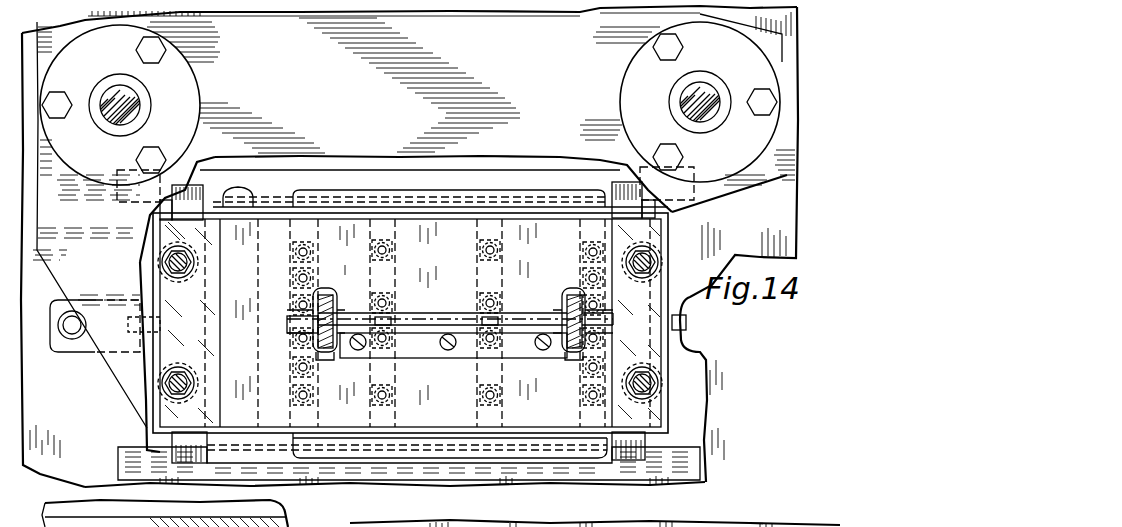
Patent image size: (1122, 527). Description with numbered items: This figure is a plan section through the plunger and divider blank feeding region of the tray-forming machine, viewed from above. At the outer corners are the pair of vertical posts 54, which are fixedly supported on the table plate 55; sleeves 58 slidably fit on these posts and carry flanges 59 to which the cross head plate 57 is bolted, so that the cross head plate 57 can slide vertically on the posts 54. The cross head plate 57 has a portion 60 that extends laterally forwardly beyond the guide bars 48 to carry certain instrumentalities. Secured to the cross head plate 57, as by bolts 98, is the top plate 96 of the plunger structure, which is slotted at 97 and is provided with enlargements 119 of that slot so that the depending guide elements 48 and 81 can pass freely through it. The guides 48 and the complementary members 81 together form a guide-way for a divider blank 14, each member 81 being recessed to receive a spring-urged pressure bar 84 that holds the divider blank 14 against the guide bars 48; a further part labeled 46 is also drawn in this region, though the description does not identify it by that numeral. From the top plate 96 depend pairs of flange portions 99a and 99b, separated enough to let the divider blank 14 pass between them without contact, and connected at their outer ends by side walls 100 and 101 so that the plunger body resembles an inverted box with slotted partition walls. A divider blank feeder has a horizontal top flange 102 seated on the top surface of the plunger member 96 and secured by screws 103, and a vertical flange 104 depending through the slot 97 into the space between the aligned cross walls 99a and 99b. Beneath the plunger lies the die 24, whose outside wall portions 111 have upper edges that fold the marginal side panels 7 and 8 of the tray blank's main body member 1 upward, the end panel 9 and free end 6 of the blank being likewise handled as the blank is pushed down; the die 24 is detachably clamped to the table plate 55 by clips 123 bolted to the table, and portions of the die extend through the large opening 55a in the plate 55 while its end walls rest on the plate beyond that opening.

The main body member 1 is at (412, 322).
The free end 6 is at (663, 409).
The marginal side panel 7 is at (440, 203).
The marginal side panel 8 is at (487, 450).
The marginal end panel 9 is at (273, 438).
The divider blank 14 is at (305, 317).
The die 24 is at (704, 468).
The right post foot 46 is at (575, 353).
The guides 48 is at (328, 352).
The vertical posts 54 is at (118, 92).
The table plate 55 is at (60, 450).
The opening 55a is at (150, 432).
The cross head plate 57 is at (67, 253).
The sleeves 58 is at (146, 107).
The flanges 59 is at (186, 68).
The portion 60 is at (538, 433).
The complementary members 81 is at (327, 293).
The pressure bar 84 is at (338, 312).
The top plate 96 is at (466, 239).
The slot 97 is at (515, 308).
The bolts 98 is at (181, 275).
The flange portions 99a is at (368, 243).
The flange portions 99b is at (377, 415).
The side wall 100 is at (366, 176).
The side wall 101 is at (326, 472).
The horizontal top flange 102 is at (462, 352).
The screws 103 is at (375, 350).
The vertical flange 104 is at (443, 324).
The outside wall portions 111 is at (513, 172).
The enlargements 119 is at (334, 292).
The clips 123 is at (92, 347).